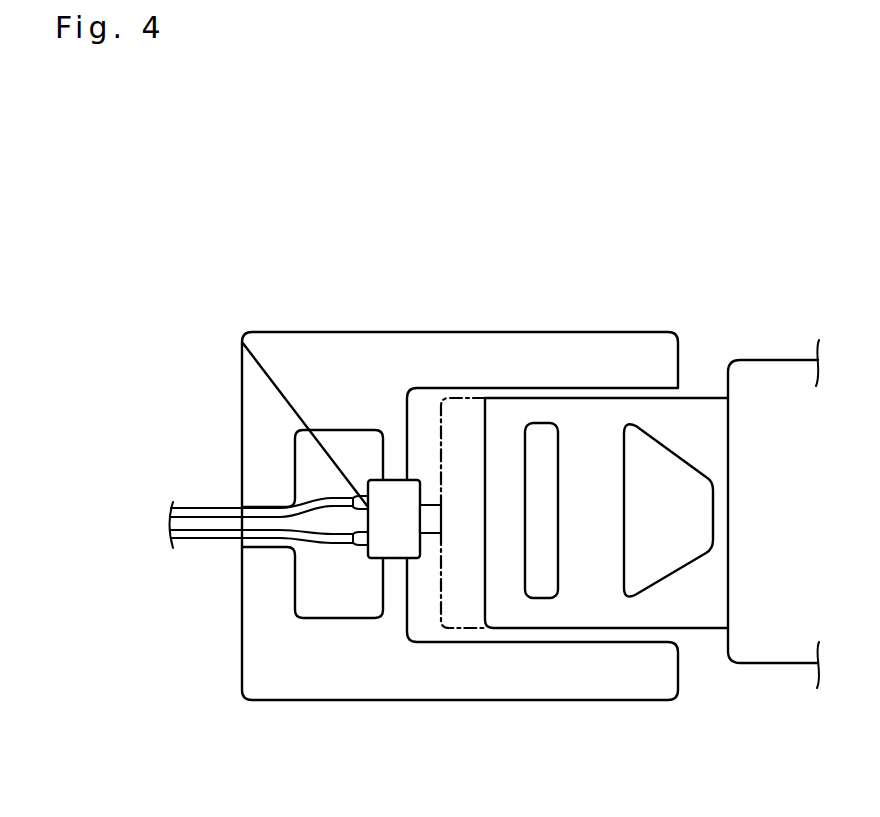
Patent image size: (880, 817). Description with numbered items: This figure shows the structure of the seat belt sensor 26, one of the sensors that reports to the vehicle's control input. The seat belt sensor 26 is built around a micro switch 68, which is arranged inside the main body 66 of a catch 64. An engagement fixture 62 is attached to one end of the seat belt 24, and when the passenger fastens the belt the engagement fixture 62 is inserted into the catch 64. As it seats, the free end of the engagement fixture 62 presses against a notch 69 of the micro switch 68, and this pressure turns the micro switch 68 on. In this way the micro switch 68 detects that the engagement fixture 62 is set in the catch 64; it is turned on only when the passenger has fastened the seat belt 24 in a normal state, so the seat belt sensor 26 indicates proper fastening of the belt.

The catch 64 is at (424, 478).
The main body 66 is at (577, 332).
The micro switch 68 is at (393, 497).
The notch 69 is at (430, 527).
The engagement fixture 62 is at (697, 415).
The seat belt 24 is at (775, 372).
The seat belt sensor 26 is at (353, 577).